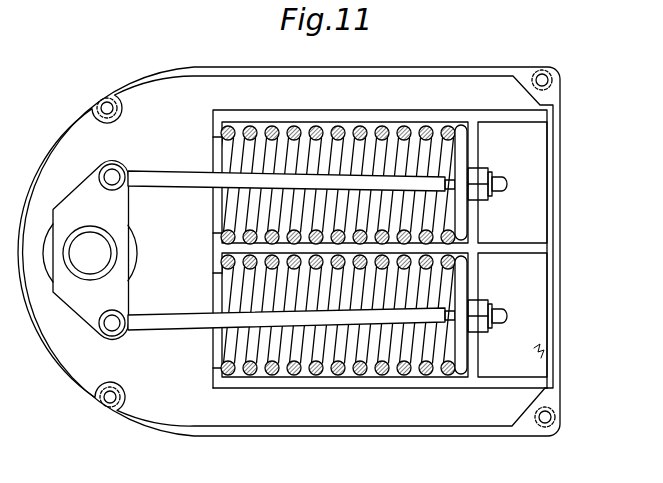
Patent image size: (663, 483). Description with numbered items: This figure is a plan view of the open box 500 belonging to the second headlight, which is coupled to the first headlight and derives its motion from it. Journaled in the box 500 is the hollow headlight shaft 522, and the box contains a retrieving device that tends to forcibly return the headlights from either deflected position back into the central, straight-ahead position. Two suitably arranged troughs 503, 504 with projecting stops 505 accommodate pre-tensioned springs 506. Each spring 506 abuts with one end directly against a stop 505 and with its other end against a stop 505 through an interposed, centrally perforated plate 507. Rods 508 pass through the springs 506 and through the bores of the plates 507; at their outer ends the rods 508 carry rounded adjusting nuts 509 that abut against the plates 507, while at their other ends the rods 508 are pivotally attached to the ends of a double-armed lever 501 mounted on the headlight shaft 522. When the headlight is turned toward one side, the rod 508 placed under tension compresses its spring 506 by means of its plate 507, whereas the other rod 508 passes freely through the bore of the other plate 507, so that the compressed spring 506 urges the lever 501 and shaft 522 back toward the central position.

The box 500 is at (547, 396).
The double-armed lever 501 is at (90, 192).
The trough 503 is at (433, 117).
The trough 504 is at (400, 381).
The projecting stop 505 is at (222, 110).
The pre-tensioned spring 506 is at (289, 246).
The centrally perforated plate 507 is at (457, 157).
The rod 508 is at (158, 175).
The nut 509 is at (490, 197).
The hollow headlight shaft 522 is at (77, 272).